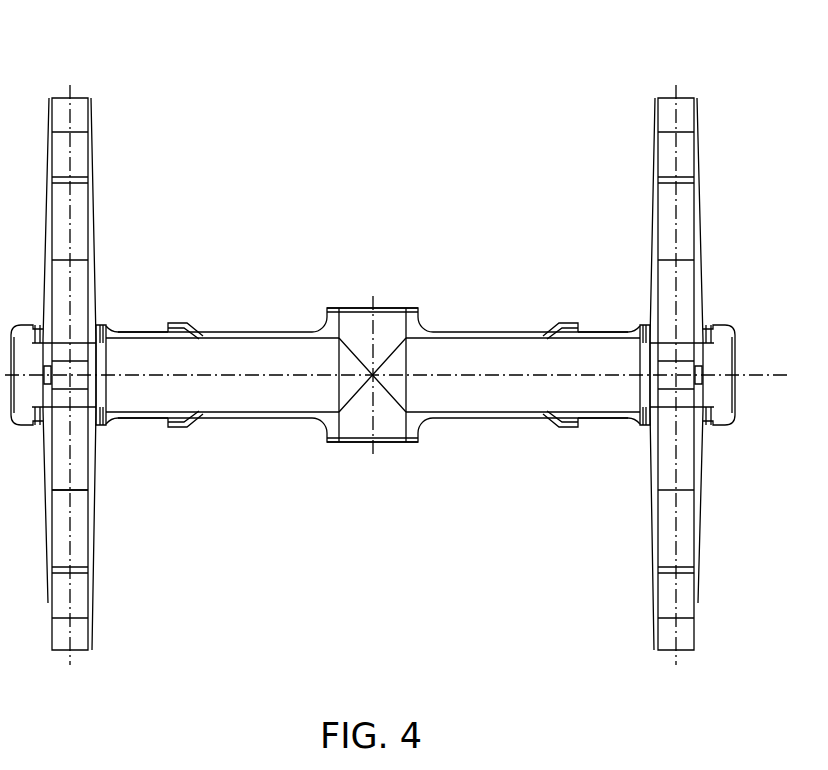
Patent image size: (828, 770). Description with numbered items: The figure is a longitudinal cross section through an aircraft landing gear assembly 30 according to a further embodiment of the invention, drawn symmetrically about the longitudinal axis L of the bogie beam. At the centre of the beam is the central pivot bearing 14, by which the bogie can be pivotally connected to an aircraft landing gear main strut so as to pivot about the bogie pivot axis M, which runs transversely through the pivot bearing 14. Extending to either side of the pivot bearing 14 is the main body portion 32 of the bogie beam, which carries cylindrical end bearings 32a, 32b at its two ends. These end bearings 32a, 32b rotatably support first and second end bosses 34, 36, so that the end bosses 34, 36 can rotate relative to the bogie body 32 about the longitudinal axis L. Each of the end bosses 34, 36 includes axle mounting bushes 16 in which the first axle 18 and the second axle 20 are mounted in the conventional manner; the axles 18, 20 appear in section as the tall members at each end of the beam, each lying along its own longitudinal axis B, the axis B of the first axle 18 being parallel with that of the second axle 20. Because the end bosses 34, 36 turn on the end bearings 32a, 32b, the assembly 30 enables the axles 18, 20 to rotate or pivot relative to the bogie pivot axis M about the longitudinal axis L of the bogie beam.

The aircraft landing gear assembly 30 is at (728, 87).
The central pivot bearing 14 is at (382, 430).
The axle mounting bushes 16 is at (100, 427).
The first axle 18 is at (92, 598).
The second axle 20 is at (698, 553).
The bogie beam main body portion 32 is at (465, 331).
The cylindrical end bearing 32a is at (180, 430).
The cylindrical end bearing 32b is at (560, 430).
The first end boss 34 is at (141, 333).
The second end boss 36 is at (603, 331).
The longitudinal axis of the axle B is at (72, 470).
The longitudinal axis of the bogie beam L is at (252, 372).
The bogie pivot axis M is at (380, 323).